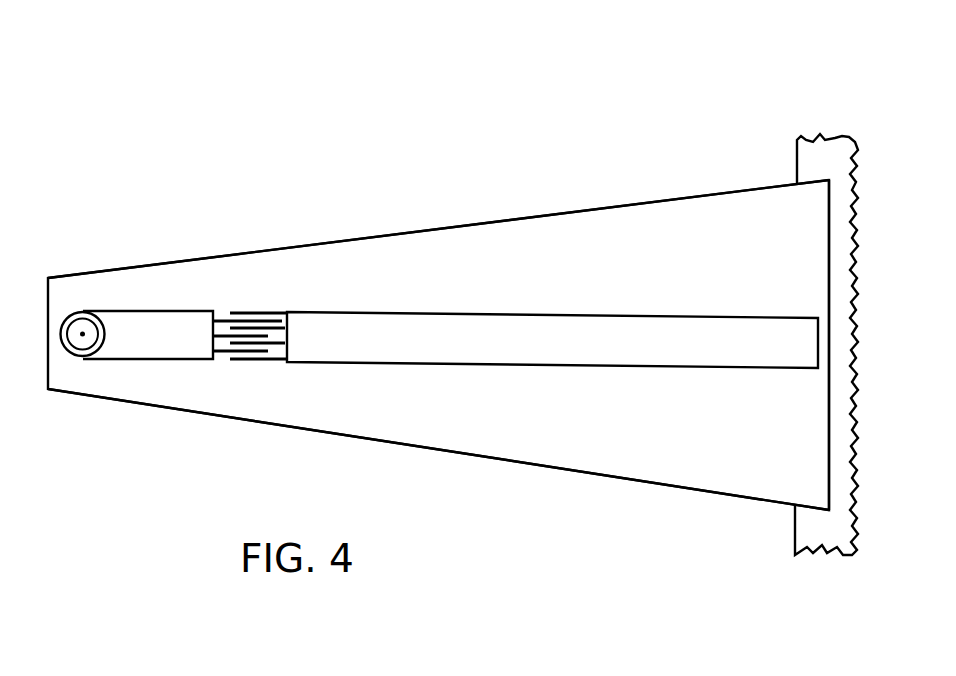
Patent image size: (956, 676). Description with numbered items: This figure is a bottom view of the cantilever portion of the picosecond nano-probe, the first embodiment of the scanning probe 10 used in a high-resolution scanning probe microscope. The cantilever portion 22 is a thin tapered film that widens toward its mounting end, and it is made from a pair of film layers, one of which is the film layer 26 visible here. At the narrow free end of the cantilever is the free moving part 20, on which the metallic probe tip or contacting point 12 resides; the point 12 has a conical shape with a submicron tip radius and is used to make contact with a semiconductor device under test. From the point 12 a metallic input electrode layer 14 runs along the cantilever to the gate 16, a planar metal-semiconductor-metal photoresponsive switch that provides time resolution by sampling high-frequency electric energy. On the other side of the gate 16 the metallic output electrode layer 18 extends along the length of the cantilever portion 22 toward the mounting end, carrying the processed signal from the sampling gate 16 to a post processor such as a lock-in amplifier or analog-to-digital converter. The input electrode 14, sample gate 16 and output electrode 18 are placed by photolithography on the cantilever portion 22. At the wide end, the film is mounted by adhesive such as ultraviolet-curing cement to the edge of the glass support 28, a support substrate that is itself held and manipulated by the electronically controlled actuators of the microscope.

The scanning probe 10 is at (613, 103).
The probe tip or contacting point 12 is at (72, 313).
The input electrode layer 14 is at (145, 308).
The gate 16 is at (262, 307).
The output electrode layer 18 is at (527, 315).
The free moving part 20 is at (112, 402).
The cantilever portion 22 is at (418, 223).
The film layer 26 is at (756, 220).
The glass support 28 is at (798, 162).